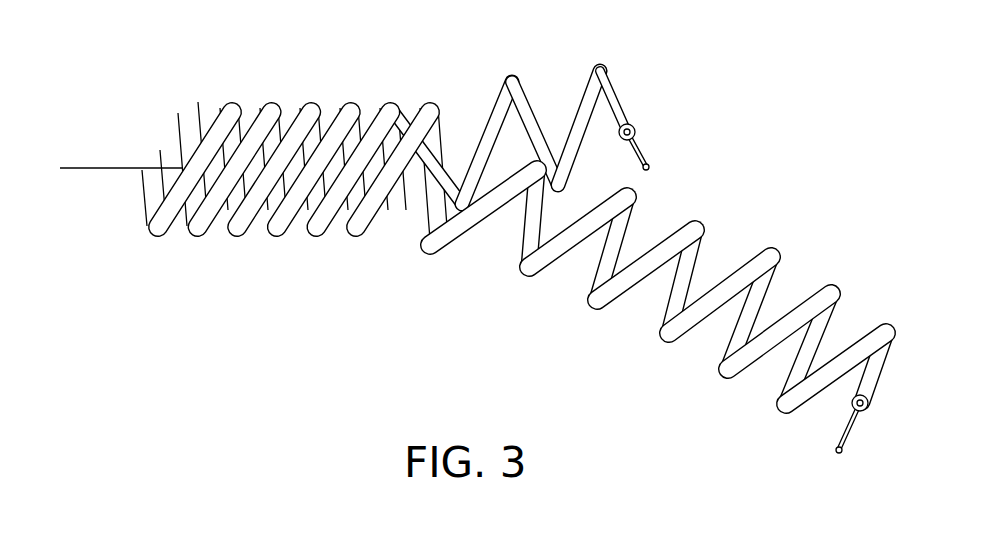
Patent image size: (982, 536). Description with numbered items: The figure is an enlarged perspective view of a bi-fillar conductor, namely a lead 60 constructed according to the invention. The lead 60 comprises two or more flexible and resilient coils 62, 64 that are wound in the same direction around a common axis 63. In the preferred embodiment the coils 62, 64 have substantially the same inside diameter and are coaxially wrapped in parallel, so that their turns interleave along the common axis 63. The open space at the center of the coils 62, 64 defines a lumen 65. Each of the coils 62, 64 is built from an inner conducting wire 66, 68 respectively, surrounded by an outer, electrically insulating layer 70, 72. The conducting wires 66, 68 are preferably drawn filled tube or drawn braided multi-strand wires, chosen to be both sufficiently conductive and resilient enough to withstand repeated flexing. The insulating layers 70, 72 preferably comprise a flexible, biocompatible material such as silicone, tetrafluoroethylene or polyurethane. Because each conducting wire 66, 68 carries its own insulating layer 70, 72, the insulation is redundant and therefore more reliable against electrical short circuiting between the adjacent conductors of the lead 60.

The lead 60 is at (476, 248).
The coil 62 is at (240, 230).
The common axis 63 is at (120, 167).
The coil 64 is at (280, 228).
The lumen 65 is at (140, 187).
The conducting wire 66 is at (647, 145).
The conducting wire 68 is at (853, 431).
The insulating layer 70 is at (634, 124).
The insulating layer 72 is at (851, 405).